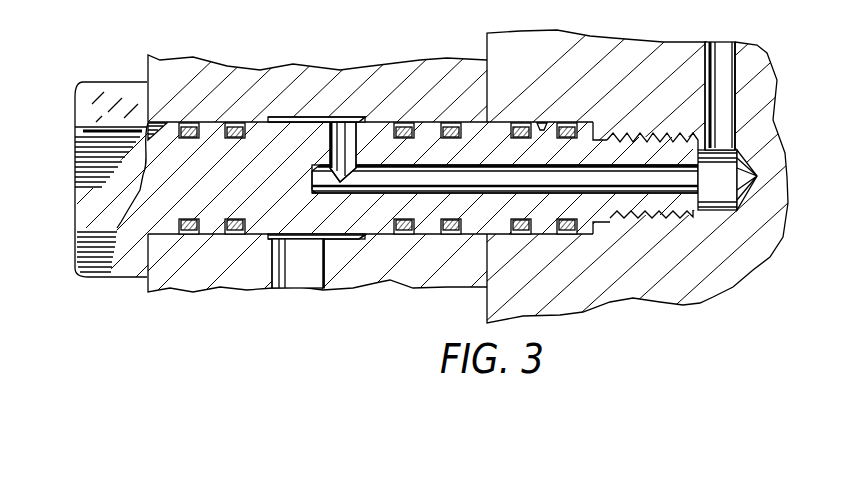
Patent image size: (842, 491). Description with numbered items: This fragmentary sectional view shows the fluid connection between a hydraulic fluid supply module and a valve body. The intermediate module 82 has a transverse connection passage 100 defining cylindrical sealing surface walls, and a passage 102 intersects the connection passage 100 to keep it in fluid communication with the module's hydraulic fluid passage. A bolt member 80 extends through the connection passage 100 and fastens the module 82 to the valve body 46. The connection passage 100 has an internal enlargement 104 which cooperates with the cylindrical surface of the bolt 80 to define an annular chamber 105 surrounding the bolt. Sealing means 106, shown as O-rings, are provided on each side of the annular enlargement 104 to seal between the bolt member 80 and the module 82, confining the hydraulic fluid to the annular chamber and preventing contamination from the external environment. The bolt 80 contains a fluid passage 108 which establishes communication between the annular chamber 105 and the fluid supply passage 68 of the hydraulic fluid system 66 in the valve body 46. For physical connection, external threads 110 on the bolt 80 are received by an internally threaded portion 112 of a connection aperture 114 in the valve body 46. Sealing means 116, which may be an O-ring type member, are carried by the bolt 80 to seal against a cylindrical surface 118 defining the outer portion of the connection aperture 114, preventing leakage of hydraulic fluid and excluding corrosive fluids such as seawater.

The valve body 46 is at (700, 300).
The hydraulic fluid system 66 is at (723, 50).
The fluid supply passage 68 is at (732, 107).
The bolt member 80 is at (113, 93).
The intermediate module 82 is at (198, 280).
The transverse connection passage 100 is at (251, 127).
The passage 102 is at (299, 266).
The internal enlargement 104 is at (323, 240).
The annular chamber 105 is at (324, 121).
The sealing means 106 is at (192, 234).
The fluid passage 108 is at (514, 182).
The external threads 110 is at (633, 140).
The internally threaded portion 112 is at (672, 138).
The connection aperture 114 is at (592, 138).
The sealing means 116 is at (578, 258).
The cylindrical surface 118 is at (536, 128).